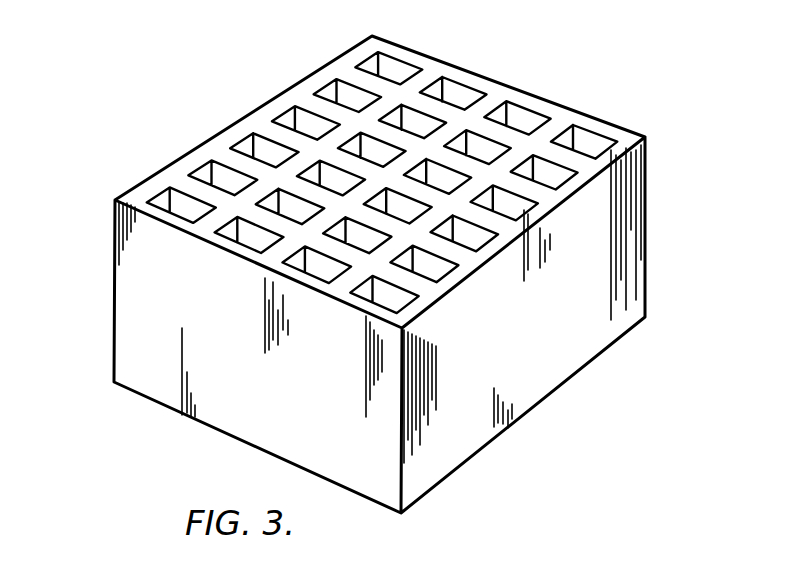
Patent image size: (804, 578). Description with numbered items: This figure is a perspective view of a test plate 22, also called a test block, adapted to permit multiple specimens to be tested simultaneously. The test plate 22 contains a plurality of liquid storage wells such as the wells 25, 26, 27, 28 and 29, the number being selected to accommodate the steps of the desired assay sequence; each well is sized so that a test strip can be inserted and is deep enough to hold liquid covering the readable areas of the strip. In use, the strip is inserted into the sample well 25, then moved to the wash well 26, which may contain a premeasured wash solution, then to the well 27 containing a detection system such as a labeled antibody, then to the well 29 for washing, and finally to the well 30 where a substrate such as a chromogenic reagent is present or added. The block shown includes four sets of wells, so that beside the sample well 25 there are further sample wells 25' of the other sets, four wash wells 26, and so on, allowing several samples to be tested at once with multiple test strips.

The test plate 22 is at (346, 274).
The sample well 25 is at (371, 321).
The well 25' is at (315, 295).
The wash well 26 is at (437, 270).
The well containing a detection system 27 is at (476, 243).
The liquid storage well 28 is at (516, 213).
The washing well 29 is at (552, 180).
The substrate well 30 is at (589, 141).